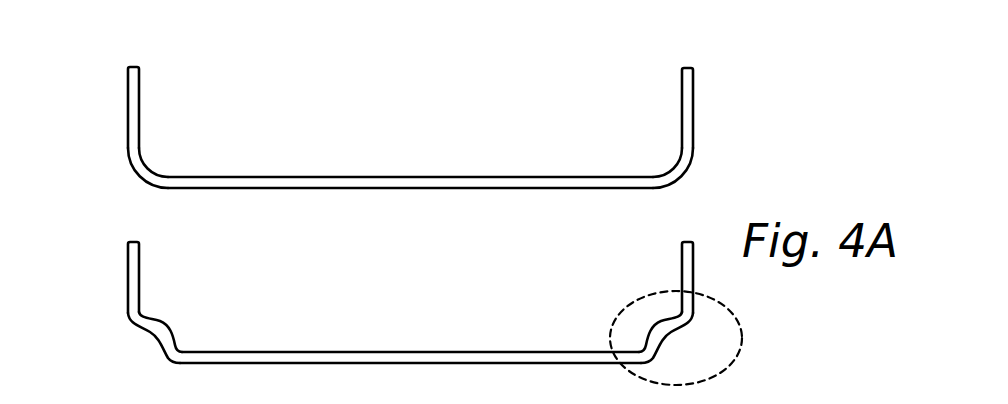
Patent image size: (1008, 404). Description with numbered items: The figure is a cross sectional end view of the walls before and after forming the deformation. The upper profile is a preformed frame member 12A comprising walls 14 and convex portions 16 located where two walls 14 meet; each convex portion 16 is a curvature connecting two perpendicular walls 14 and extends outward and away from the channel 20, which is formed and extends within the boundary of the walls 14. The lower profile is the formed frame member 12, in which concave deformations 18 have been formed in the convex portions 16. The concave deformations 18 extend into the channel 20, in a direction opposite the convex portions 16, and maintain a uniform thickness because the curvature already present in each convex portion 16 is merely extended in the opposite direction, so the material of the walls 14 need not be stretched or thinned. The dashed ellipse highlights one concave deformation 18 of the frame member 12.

The frame member 12 is at (117, 283).
The preformed frame member 12A is at (117, 140).
The walls 14 is at (128, 87).
The convex portion 16 is at (150, 167).
The concave deformation 18 is at (155, 333).
The channel 20 is at (433, 140).